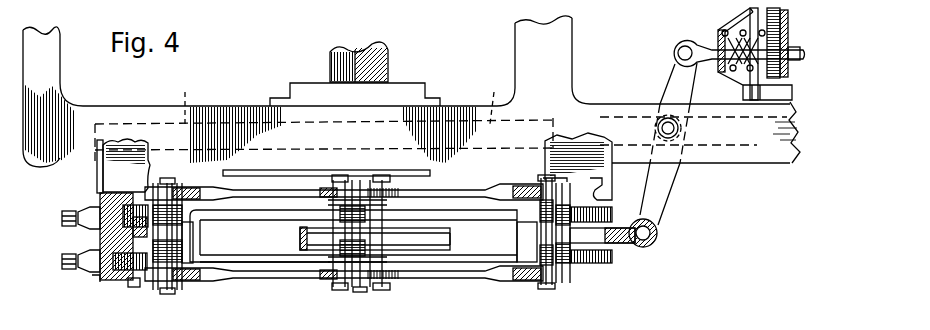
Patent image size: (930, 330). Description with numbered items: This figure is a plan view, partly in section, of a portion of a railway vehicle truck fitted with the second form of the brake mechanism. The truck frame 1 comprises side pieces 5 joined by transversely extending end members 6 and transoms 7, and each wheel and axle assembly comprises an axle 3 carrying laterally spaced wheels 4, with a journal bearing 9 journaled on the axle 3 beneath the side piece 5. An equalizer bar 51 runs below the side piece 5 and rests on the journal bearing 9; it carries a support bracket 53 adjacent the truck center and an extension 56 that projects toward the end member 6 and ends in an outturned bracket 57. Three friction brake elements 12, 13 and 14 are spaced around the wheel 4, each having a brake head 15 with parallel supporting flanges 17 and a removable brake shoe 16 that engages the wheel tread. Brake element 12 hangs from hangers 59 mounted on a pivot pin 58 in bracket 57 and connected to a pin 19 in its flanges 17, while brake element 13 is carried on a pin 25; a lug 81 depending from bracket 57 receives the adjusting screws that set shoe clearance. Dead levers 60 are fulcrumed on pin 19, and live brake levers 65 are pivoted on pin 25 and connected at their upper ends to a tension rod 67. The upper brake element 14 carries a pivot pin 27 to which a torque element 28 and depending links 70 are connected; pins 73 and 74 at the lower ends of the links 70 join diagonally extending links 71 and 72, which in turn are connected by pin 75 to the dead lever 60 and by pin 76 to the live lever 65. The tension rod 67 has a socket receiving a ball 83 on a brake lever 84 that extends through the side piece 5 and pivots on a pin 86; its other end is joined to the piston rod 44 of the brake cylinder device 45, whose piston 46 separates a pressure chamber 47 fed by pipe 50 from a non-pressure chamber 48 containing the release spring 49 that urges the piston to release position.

The truck frame 1 is at (213, 110).
The axle 3 is at (378, 45).
The wheel 4 is at (226, 264).
The side piece 5 is at (738, 165).
The end member 6 is at (60, 37).
The transom 7 is at (522, 38).
The journal bearing 9 is at (305, 83).
The friction brake element 12 is at (194, 265).
The friction brake element 13 is at (525, 262).
The brake element 14 is at (296, 263).
The brake head 15 is at (300, 232).
The brake shoe 16 is at (202, 229).
The supporting flange 17 is at (145, 238).
The pin 19 is at (138, 288).
The pin 25 is at (562, 285).
The pivot pin 27 is at (357, 292).
The torque element 28 is at (452, 240).
The piston rod 44 is at (691, 46).
The brake cylinder device 45 is at (752, 14).
The brake cylinder piston 46 is at (784, 12).
The pressure chamber 47 is at (790, 90).
The non-pressure chamber 48 is at (720, 29).
The release spring 49 is at (788, 36).
The pipe 50 is at (794, 61).
The equalizer bar 51 is at (780, 182).
The support bracket 53 is at (630, 160).
The extension 56 is at (171, 103).
The outturned bracket 57 is at (97, 185).
The pivot pin 58 is at (128, 286).
The hanger 59 is at (128, 215).
The dead lever 60 is at (190, 190).
The live brake lever 65 is at (524, 186).
The tension rod 67 is at (625, 245).
The depending link 70 is at (398, 188).
The diagonally extending link 71 is at (290, 170).
The diagonally extending link 72 is at (480, 190).
The pin 73 is at (335, 290).
The pin 74 is at (378, 289).
The pin 75 is at (175, 185).
The pin 76 is at (545, 180).
The lug 81 is at (92, 278).
The ball 83 is at (660, 233).
The brake lever 84 is at (665, 188).
The pin 86 is at (681, 128).